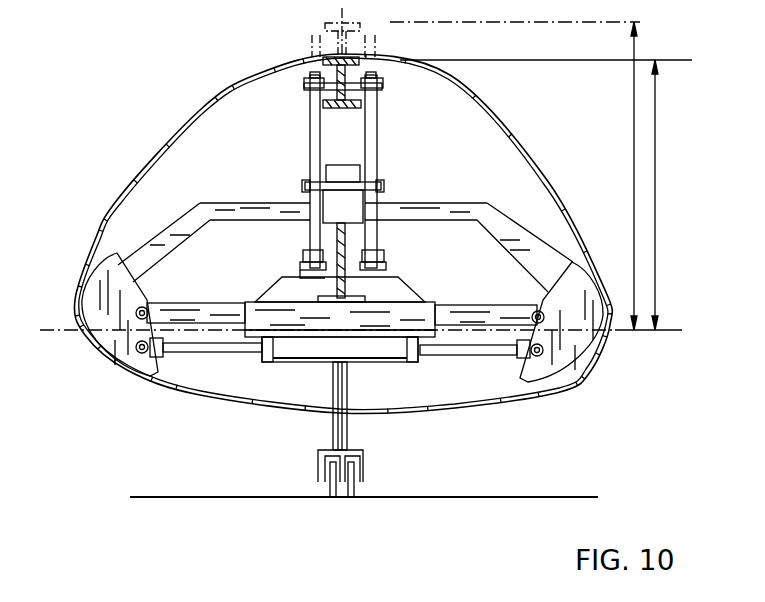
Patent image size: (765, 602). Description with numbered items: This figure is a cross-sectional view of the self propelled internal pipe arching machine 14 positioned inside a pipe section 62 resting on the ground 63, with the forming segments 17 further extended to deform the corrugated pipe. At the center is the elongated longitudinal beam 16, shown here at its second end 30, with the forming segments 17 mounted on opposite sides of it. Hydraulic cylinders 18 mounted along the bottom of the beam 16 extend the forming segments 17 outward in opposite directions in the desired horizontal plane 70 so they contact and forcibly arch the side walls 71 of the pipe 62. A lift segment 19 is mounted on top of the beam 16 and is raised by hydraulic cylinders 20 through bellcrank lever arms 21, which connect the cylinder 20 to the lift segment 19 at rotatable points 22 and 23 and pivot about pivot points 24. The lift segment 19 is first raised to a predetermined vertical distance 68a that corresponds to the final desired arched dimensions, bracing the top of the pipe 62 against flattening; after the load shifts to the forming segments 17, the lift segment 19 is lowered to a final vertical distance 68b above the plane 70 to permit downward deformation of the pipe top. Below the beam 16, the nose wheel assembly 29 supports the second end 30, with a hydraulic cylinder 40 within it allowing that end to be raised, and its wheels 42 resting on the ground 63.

The self propelled internal pipe arching machine 14 is at (242, 128).
The longitudinal beam 16 is at (322, 233).
The forming segments 17 is at (117, 258).
The hydraulic cylinders 18 is at (305, 347).
The lift segment 19 is at (360, 26).
The hydraulic cylinders 20 is at (303, 264).
The bellcrank lever arms 21 is at (310, 45).
The rotatable point 22 is at (303, 252).
The rotatable point 23 is at (305, 87).
The pivot points 24 is at (382, 186).
The nose wheel assembly 29 is at (316, 455).
The second end 30 is at (303, 252).
The hydraulic cylinder 40 is at (333, 428).
The wheels 42 is at (350, 498).
The pipe section 62 is at (452, 86).
The ground 63 is at (490, 497).
The predetermined vertical distance 68a is at (634, 114).
The final vertical distance 68b is at (657, 182).
The horizontal plane 70 is at (75, 330).
The side walls 71 is at (97, 230).